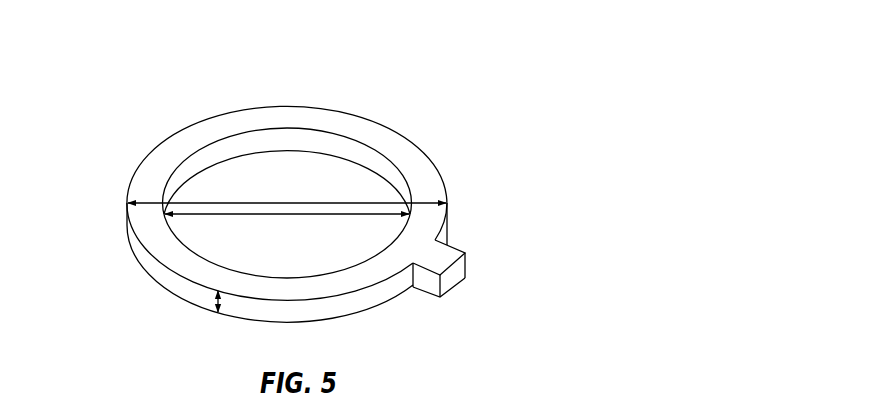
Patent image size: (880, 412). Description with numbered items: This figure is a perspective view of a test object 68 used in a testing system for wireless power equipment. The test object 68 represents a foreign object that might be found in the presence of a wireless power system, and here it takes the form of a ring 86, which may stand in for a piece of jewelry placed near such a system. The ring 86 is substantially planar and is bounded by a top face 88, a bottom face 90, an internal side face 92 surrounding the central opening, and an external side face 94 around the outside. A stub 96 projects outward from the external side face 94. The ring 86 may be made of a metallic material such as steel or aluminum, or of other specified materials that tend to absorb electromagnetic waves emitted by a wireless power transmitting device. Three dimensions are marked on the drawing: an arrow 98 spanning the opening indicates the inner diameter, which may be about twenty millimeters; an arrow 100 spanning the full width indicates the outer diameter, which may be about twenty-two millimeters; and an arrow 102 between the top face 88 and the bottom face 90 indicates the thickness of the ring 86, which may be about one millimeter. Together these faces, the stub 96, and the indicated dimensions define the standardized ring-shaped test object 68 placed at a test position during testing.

The test object 68 is at (474, 71).
The ring 86 is at (153, 152).
The top face 88 is at (442, 181).
The bottom face 90 is at (404, 318).
The internal side face 92 is at (377, 162).
The external side face 94 is at (466, 256).
The stub 96 is at (455, 273).
The arrow indicating inner diameter 98 is at (197, 215).
The arrow indicating outer diameter 100 is at (136, 212).
The arrow indicating thickness 102 is at (217, 302).